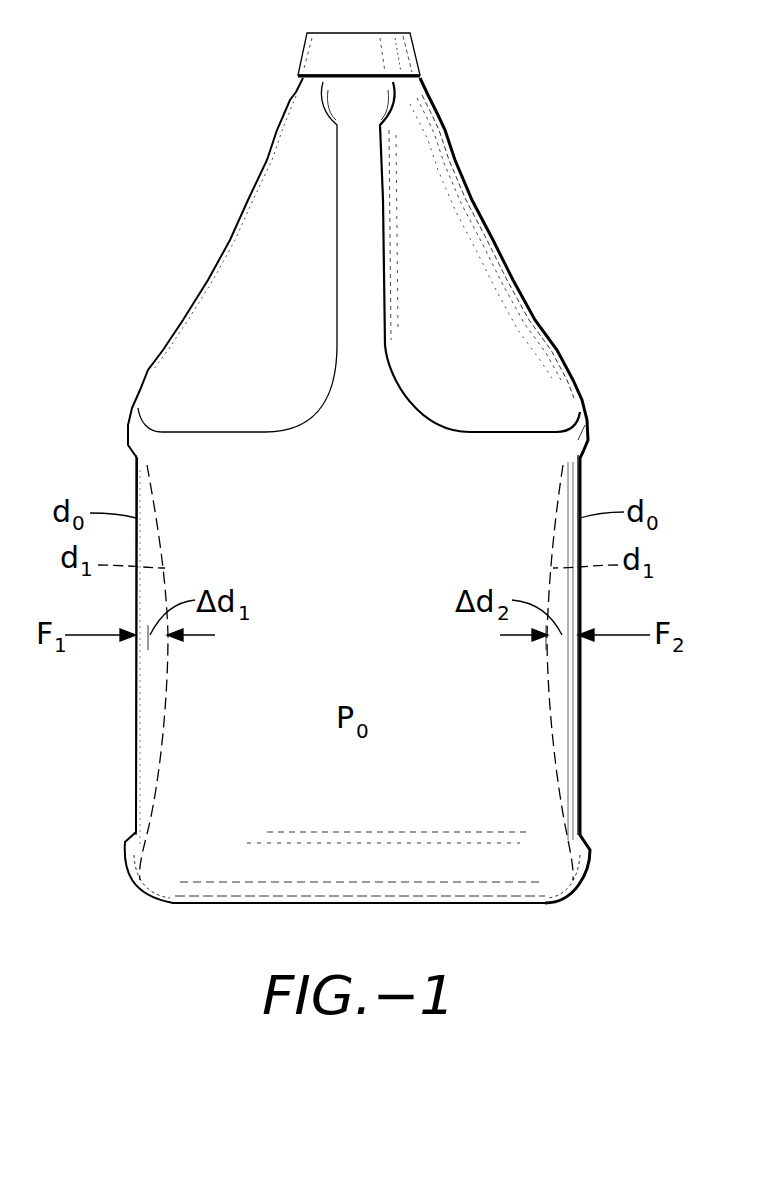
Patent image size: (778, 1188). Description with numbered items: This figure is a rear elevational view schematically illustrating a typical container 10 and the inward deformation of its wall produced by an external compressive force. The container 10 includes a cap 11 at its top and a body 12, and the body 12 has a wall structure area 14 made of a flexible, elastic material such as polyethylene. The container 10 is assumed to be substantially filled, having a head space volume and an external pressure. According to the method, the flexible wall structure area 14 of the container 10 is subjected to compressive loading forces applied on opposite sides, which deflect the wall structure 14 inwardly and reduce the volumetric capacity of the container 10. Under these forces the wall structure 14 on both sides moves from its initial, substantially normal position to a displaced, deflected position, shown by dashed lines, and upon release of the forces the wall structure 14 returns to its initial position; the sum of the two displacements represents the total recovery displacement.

The container 10 is at (568, 355).
The cap 11 is at (418, 36).
The body 12 is at (590, 433).
The wall structure area 14 is at (136, 782).